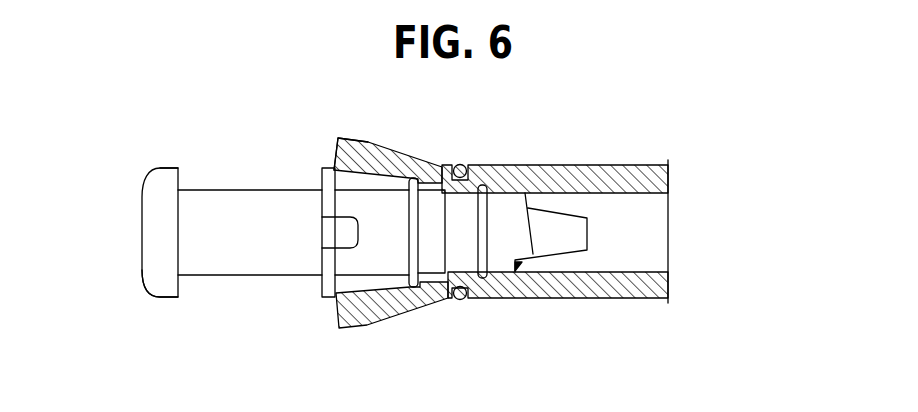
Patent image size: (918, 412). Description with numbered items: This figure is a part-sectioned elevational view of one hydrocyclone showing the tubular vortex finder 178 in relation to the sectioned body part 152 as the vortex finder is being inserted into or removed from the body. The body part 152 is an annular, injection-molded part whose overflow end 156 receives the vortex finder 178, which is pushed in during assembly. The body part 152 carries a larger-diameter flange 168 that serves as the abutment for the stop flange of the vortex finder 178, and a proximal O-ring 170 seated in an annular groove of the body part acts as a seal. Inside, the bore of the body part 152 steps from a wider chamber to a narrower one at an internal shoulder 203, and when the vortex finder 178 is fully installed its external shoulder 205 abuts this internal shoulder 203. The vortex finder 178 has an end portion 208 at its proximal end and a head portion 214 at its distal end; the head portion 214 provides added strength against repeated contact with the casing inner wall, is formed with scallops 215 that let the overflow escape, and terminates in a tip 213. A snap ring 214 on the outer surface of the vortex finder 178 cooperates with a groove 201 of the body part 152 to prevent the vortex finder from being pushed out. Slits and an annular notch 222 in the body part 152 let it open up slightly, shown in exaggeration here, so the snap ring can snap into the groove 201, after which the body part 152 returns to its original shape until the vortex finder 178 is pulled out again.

The body part 152 is at (577, 170).
The overflow end 156 is at (337, 152).
The flange 168 is at (353, 138).
The proximal O-ring 170 is at (458, 303).
The vortex finder 178 is at (247, 212).
The groove 201 is at (413, 296).
The internal shoulder 203 is at (479, 180).
The external shoulder 205 is at (447, 203).
The end portion 208 is at (567, 247).
The tip 213 is at (140, 196).
The head portion 214 is at (170, 167).
The scallops 215 is at (168, 233).
The annular notch 222 is at (437, 293).